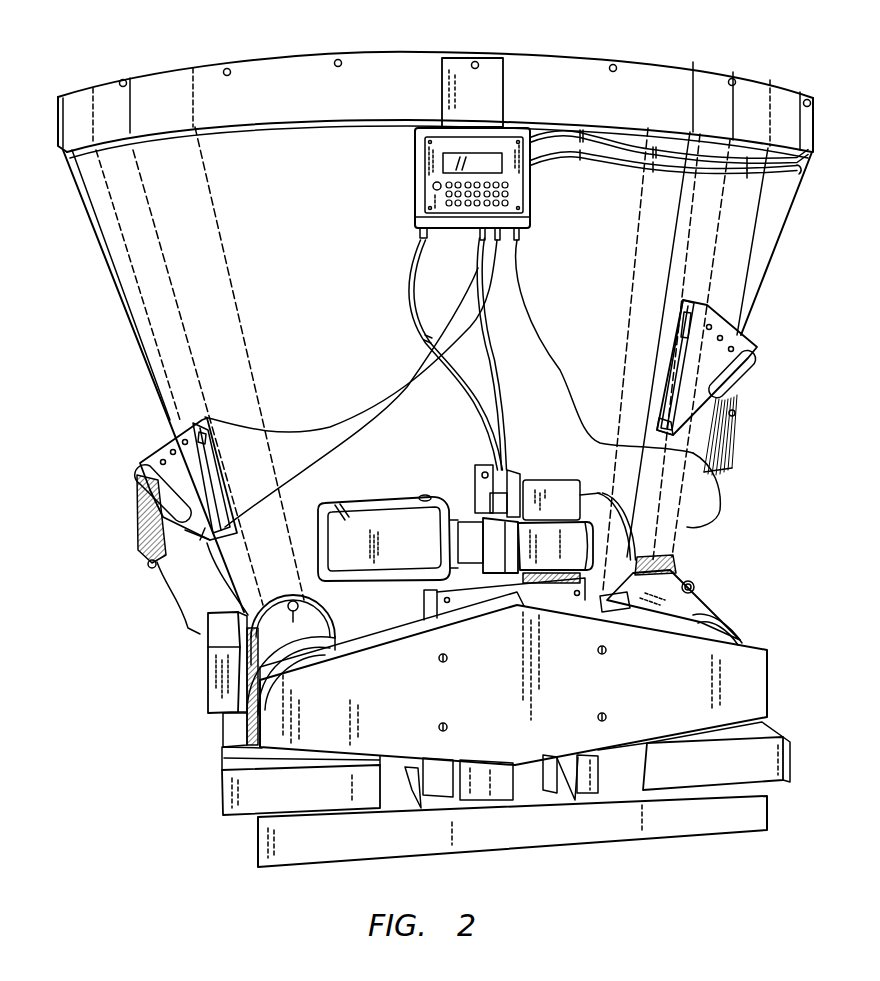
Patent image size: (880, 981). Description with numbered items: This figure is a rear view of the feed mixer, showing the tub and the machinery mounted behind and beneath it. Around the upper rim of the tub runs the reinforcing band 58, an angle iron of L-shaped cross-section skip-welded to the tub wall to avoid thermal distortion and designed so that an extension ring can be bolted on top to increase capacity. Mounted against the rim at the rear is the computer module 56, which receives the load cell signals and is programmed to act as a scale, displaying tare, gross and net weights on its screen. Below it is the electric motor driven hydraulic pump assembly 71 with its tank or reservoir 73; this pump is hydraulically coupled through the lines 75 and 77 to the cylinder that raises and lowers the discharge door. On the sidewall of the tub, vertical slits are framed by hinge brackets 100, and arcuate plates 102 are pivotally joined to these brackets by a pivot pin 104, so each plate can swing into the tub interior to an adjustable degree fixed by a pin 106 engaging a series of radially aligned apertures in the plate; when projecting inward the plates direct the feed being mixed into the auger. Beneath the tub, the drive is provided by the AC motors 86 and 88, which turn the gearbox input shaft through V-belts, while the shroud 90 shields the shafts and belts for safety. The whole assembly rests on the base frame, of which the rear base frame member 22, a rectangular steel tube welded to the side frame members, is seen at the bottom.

The rear base frame member 22 is at (617, 834).
The computer module 56 is at (441, 140).
The reinforcing band 58 is at (243, 76).
The electric motor driven hydraulic pump assembly 71 is at (513, 479).
The tank or reservoir 73 is at (377, 500).
The hydraulic line 75 is at (600, 170).
The hydraulic line 77 is at (613, 135).
The AC motor 86 is at (203, 657).
The AC motor 88 is at (707, 599).
The shroud 90 is at (748, 662).
The hinge bracket 100 is at (217, 473).
The arcuate plate 102 is at (160, 446).
The pivot pin 104 is at (667, 418).
The pin 106 is at (680, 323).